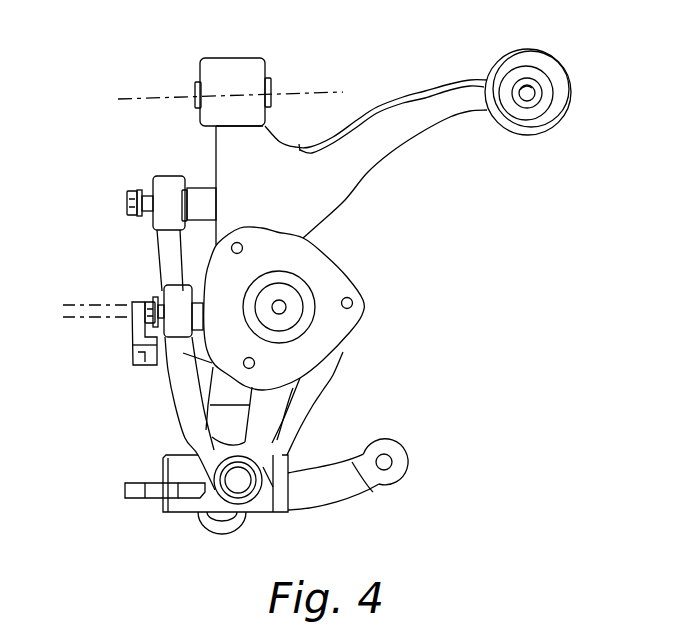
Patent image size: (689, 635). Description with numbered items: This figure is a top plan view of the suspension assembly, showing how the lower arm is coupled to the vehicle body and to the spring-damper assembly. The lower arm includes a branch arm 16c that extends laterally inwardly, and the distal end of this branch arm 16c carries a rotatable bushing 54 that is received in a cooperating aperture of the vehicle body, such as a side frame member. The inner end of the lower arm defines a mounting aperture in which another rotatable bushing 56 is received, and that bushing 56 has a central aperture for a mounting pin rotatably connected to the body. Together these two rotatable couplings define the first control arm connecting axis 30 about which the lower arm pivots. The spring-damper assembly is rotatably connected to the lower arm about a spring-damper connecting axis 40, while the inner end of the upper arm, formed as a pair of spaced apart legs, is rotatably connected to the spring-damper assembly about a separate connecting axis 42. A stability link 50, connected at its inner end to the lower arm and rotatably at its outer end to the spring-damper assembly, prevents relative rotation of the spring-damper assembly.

The branch arm 16c is at (376, 152).
The rotatable bushing 56 is at (272, 92).
The first control arm connecting axis 30 is at (142, 98).
The rotatable bushing 54 is at (542, 117).
The stability link 50 is at (157, 250).
The connecting axis 42 is at (82, 303).
The spring-damper connecting axis 40 is at (82, 327).